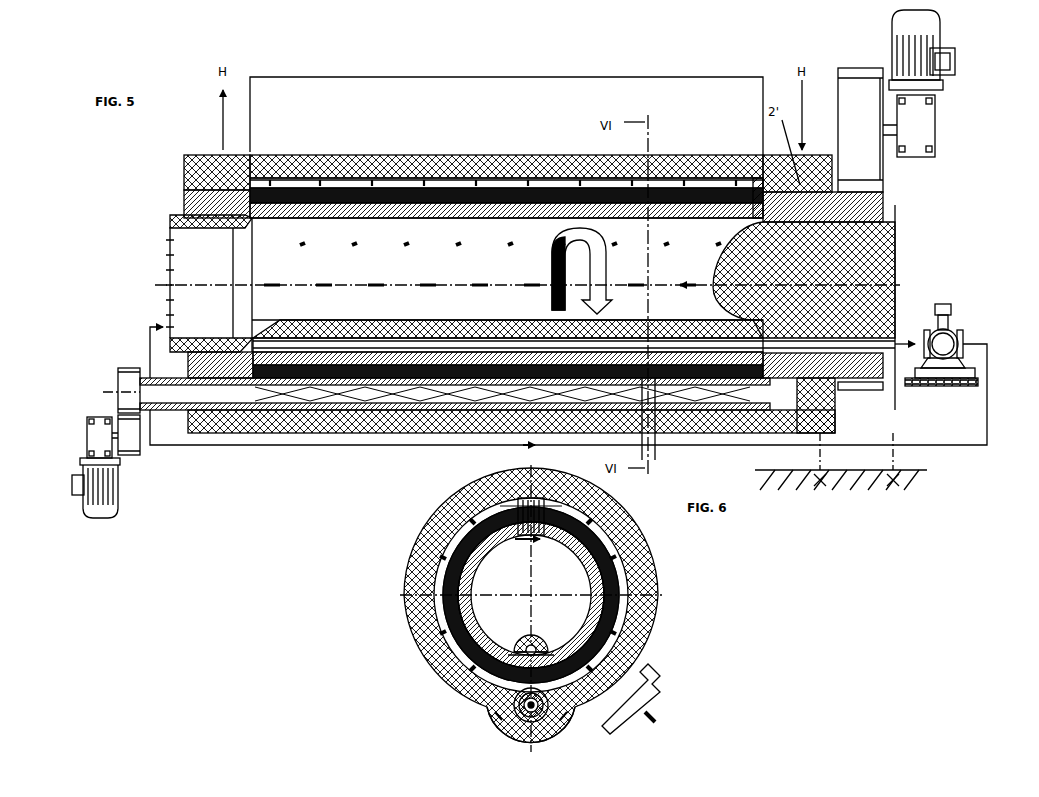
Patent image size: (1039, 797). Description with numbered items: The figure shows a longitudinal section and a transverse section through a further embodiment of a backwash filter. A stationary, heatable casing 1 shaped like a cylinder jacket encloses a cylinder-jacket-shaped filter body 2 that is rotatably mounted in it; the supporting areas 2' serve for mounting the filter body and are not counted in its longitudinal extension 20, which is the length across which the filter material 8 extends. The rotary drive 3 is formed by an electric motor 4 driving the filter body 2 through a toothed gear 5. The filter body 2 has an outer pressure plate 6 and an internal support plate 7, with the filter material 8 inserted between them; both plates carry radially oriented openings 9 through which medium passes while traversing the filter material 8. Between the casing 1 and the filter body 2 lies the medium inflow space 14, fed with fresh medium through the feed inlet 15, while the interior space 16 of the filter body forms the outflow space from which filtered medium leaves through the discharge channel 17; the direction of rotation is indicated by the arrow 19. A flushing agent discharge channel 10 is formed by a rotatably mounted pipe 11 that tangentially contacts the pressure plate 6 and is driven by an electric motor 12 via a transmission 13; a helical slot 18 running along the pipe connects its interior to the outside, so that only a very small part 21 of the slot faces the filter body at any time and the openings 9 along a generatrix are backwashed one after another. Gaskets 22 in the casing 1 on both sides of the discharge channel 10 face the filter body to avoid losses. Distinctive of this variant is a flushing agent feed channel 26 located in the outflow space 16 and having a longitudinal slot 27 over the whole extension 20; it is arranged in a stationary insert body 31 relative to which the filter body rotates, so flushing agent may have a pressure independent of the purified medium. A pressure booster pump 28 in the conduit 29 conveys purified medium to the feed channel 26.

In FIG. 5, the casing 1 is at (712, 165).
In FIG. 6, the casing 1 is at (650, 630).
In FIG. 5, the filter body 2 is at (197, 200).
In FIG. 6, the filter body 2 is at (571, 588).
In FIG. 5, the supporting areas 2' is at (196, 167).
In FIG. 5, the rotary drive 3 is at (958, 58).
In FIG. 5, the electric motor 4 is at (917, 27).
In FIG. 5, the toothed gear 5 is at (918, 135).
In FIG. 5, the pressure plate 6 is at (662, 183).
In FIG. 6, the pressure plate 6 is at (626, 600).
In FIG. 5, the support plate 7 is at (590, 190).
In FIG. 6, the support plate 7 is at (637, 647).
In FIG. 5, the filter material 8 is at (560, 183).
In FIG. 6, the filter material 8 is at (425, 628).
In FIG. 5, the openings 9 is at (756, 200).
In FIG. 6, the openings 9 is at (552, 500).
In FIG. 5, the flushing agent discharge channel 10 is at (195, 396).
In FIG. 6, the flushing agent discharge channel 10 is at (531, 727).
In FIG. 5, the pipe 11 is at (703, 413).
In FIG. 6, the pipe 11 is at (553, 713).
In FIG. 5, the electric motor 12 is at (95, 505).
In FIG. 5, the transmission 13 is at (100, 430).
In FIG. 5, the medium inflow space 14 is at (462, 182).
In FIG. 6, the medium inflow space 14 is at (432, 584).
In FIG. 6, the feed inlet 15 is at (627, 698).
In FIG. 5, the interior space 16 is at (443, 290).
In FIG. 6, the interior space 16 is at (510, 598).
In FIG. 5, the discharge channel 17 is at (190, 270).
In FIG. 5, the slot 18 is at (503, 410).
In FIG. 6, the slot 18 is at (515, 712).
In FIG. 5, the arrow 19 is at (608, 296).
In FIG. 6, the arrow 19 is at (525, 542).
In FIG. 5, the longitudinal extension 20 is at (506, 108).
In FIG. 5, the small part 21 is at (687, 461).
In FIG. 6, the gaskets 22 is at (497, 718).
In FIG. 5, the flushing agent feed channel 26 is at (698, 335).
In FIG. 6, the flushing agent feed channel 26 is at (548, 640).
In FIG. 5, the longitudinal slot 27 is at (502, 350).
In FIG. 6, the longitudinal slot 27 is at (550, 655).
In FIG. 5, the pressure booster pump 28 is at (950, 320).
In FIG. 5, the conduit 29 is at (930, 445).
In FIG. 5, the stationary insert body 31 is at (853, 303).
In FIG. 6, the stationary insert body 31 is at (522, 637).